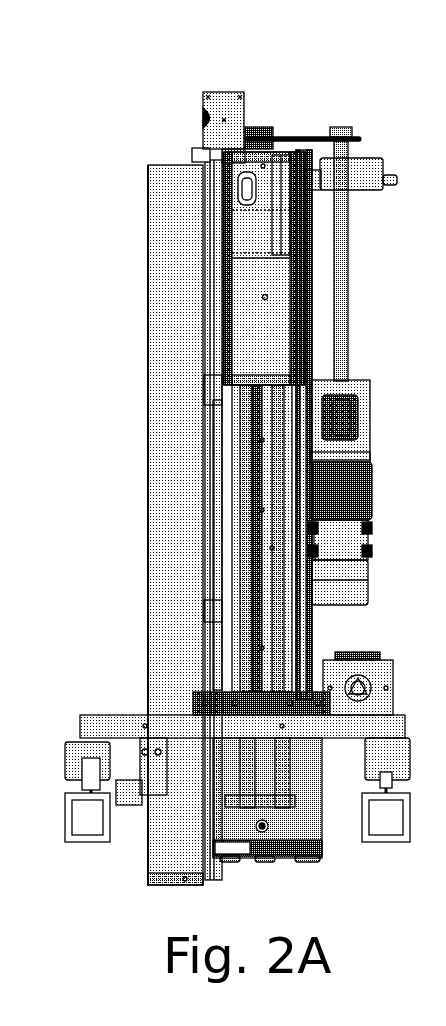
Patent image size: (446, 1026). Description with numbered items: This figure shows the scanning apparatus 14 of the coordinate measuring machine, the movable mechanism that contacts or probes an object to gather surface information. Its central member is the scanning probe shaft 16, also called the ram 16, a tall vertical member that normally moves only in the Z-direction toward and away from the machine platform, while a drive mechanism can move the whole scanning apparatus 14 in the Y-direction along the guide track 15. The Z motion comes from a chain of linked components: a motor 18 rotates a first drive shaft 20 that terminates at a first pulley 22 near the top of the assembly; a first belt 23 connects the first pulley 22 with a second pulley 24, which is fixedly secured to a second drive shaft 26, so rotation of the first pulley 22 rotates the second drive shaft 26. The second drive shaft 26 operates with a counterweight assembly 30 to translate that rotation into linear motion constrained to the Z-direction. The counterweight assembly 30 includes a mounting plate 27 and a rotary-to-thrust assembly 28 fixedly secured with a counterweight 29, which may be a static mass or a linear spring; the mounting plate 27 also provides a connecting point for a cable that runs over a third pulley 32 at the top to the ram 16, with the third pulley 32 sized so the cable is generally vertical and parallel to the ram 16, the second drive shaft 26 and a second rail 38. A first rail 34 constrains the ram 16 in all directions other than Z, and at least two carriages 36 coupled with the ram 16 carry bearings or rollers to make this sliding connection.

The scanning apparatus 14 is at (249, 68).
The guide track 15 is at (82, 782).
The scanning probe shaft 16 is at (148, 525).
The motor 18 is at (368, 425).
The first drive shaft 20 is at (350, 272).
The first pulley 22 is at (348, 128).
The first belt 23 is at (300, 136).
The second pulley 24 is at (254, 125).
The second drive shaft 26 is at (254, 440).
The mounting plate 27 is at (282, 186).
The rotary-to-thrust assembly 28 is at (215, 172).
The counterweight 29 is at (245, 317).
The counterweight assembly 30 is at (265, 255).
The third pulley 32 is at (200, 118).
The first rail 34 is at (215, 565).
The carriages 36 is at (210, 232).
The second rail 38 is at (300, 648).